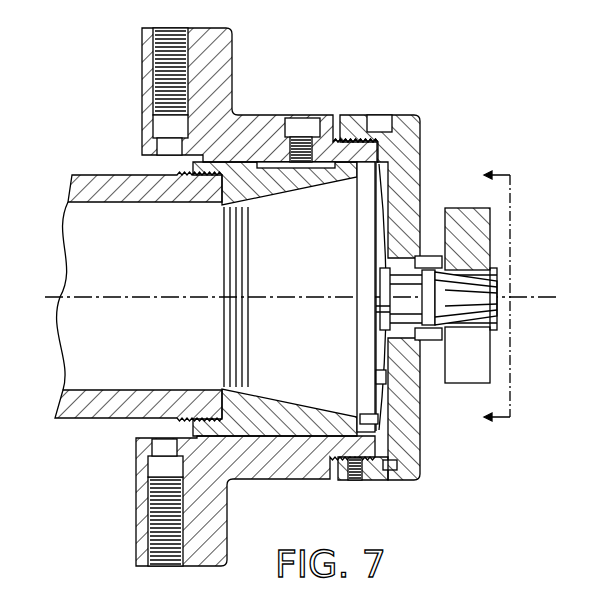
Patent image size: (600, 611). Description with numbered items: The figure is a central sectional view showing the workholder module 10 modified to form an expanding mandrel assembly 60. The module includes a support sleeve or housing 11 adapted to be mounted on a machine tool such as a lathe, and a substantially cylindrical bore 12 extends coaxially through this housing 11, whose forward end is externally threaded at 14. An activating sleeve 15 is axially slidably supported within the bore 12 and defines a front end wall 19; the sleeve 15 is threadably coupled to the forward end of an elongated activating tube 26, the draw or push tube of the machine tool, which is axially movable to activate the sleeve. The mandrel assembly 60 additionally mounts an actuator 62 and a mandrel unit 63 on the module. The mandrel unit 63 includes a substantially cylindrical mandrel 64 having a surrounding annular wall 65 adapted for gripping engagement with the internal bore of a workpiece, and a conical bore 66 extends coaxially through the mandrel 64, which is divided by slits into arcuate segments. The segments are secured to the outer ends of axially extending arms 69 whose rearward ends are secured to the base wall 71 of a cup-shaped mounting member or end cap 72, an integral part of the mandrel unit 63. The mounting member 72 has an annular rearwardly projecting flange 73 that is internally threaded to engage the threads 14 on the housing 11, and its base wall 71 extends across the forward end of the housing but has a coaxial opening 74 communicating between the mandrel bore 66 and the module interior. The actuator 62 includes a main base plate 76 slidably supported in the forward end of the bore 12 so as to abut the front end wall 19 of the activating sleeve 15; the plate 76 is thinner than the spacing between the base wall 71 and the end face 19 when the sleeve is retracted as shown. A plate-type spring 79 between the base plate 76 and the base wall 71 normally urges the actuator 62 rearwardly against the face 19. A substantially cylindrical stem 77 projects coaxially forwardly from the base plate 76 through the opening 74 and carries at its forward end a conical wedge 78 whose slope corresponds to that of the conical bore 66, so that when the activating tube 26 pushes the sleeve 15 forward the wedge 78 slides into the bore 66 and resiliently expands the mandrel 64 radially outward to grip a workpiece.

The workholder module 10 is at (98, 440).
The support sleeve or housing 11 is at (225, 71).
The cylindrical bore 12 is at (284, 438).
The external threads 14 is at (337, 136).
The activating sleeve 15 is at (228, 206).
The front end wall 19 is at (365, 420).
The activating tube 26 is at (100, 187).
The expanding mandrel assembly 60 is at (368, 56).
The actuator 62 is at (350, 256).
The mandrel unit 63 is at (434, 161).
The cylindrical mandrel 64 is at (482, 233).
The annular wall 65 is at (483, 208).
The conical bore 66 is at (494, 306).
The axially extending arm 69 is at (430, 343).
The base wall 71 is at (408, 437).
The mounting member or end cap 72 is at (405, 140).
The annular rearwardly projecting flange 73 is at (363, 140).
The opening 74 is at (384, 316).
The main base plate 76 is at (362, 220).
The cylindrical stem 77 is at (392, 293).
The conical wedge 78 is at (460, 286).
The plate-type spring 79 is at (380, 380).